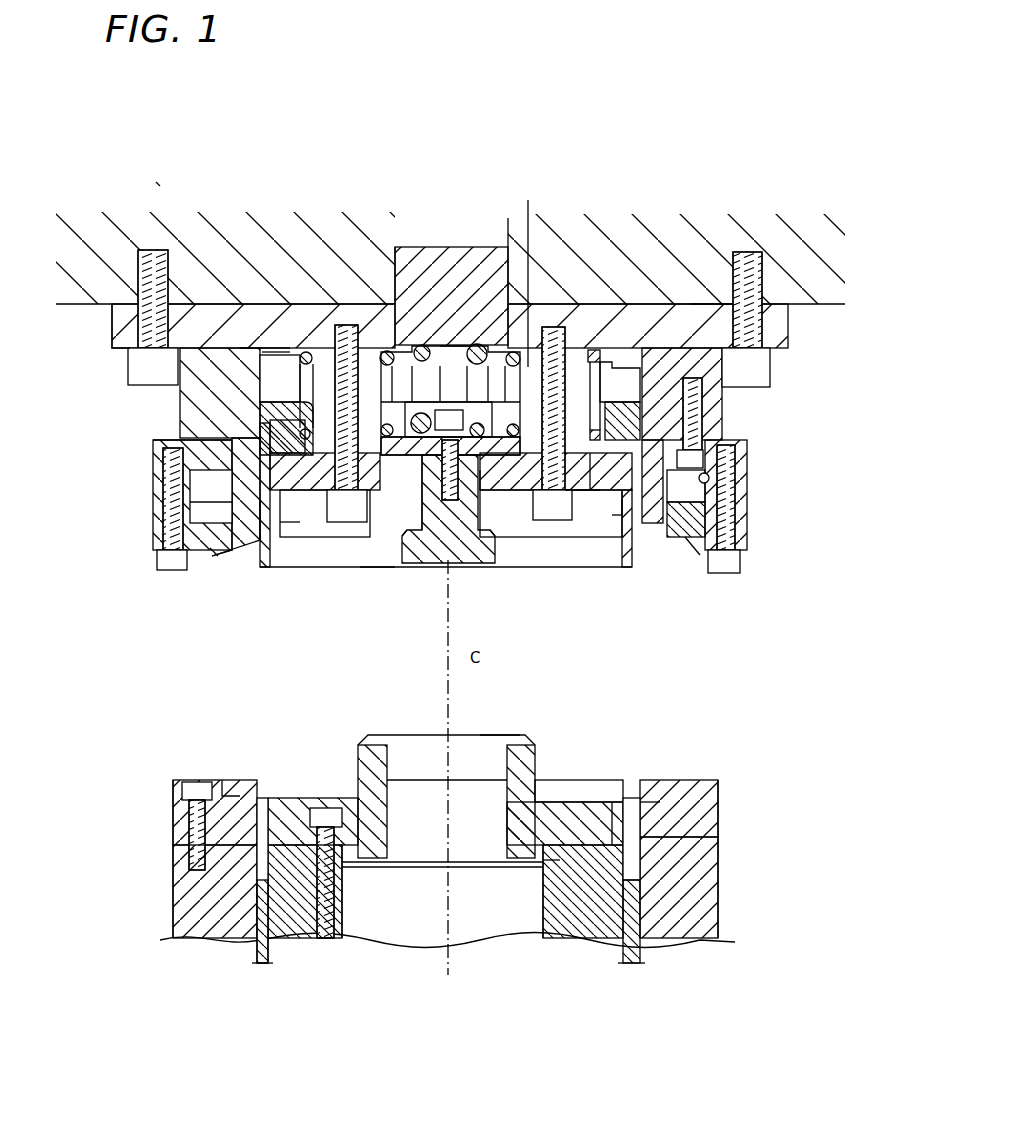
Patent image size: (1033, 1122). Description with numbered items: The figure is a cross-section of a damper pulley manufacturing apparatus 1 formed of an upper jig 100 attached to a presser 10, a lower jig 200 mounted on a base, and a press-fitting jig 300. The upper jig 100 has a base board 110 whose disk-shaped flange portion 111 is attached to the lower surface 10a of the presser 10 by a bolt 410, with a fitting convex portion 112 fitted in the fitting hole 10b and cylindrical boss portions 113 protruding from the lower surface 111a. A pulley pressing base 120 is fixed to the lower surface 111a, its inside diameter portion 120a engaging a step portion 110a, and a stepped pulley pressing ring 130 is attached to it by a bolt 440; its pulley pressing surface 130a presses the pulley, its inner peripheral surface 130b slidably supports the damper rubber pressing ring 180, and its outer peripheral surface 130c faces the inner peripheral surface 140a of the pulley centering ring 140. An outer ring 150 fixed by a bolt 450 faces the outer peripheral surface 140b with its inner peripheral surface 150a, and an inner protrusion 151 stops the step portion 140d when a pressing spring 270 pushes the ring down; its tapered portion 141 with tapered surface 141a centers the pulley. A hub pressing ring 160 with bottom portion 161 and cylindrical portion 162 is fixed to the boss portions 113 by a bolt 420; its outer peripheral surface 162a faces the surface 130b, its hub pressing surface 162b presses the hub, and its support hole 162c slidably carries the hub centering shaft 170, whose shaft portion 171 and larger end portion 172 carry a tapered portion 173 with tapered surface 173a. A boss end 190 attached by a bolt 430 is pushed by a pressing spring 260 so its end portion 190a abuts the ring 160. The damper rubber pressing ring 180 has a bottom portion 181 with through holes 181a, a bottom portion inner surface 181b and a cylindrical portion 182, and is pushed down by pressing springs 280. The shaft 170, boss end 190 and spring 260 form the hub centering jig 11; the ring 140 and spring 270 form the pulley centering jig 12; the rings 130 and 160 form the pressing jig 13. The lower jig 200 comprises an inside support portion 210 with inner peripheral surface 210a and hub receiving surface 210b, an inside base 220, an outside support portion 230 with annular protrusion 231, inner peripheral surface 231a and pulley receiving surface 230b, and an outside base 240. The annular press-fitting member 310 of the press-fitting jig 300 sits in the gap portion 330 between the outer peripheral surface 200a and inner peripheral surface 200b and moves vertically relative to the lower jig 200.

The damper pulley manufacturing apparatus 1 is at (158, 185).
The presser 10 is at (558, 213).
The lower surface 10a is at (700, 296).
The fitting hole 10b is at (395, 245).
The hub centering jig 11 is at (456, 340).
The pulley centering jig 12 is at (214, 558).
The pressing jig 13 is at (374, 572).
The upper jig 100 is at (460, 410).
The base board 110 is at (588, 288).
The step portion 110a is at (262, 348).
The flange portion 111 is at (646, 336).
The lower surface 111a is at (115, 347).
The fitting convex portion 112 is at (421, 253).
The boss portion 113 is at (531, 271).
The pulley pressing base 120 is at (185, 400).
The inside diameter portion 120a is at (268, 352).
The pulley pressing ring 130 is at (246, 528).
The pulley pressing surface 130a is at (258, 525).
The inner peripheral surface 130b is at (272, 522).
The outer peripheral surface 130c is at (205, 478).
The pulley centering ring 140 is at (154, 513).
The inner peripheral surface 140a is at (660, 522).
The outer peripheral surface 140b is at (195, 516).
The step portion 140d is at (712, 548).
The tapered portion 141 is at (212, 552).
The tapered surface 141a is at (682, 543).
The outer ring 150 is at (751, 526).
The inner peripheral surface 150a is at (708, 478).
The inner protrusion 151 is at (696, 540).
The hub pressing ring 160 is at (528, 530).
The bottom portion 161 is at (600, 472).
The cylindrical portion 162 is at (618, 519).
The outer peripheral surface 162a is at (626, 505).
The hub pressing surface 162b is at (626, 568).
The support hole 162c is at (486, 482).
The hub centering shaft 170 is at (452, 528).
The shaft portion 171 is at (428, 512).
The end portion 172 is at (452, 530).
The tapered portion 173 is at (408, 560).
The tapered surface 173a is at (484, 556).
The damper rubber pressing ring 180 is at (264, 560).
The bottom portion 181 is at (280, 400).
The through hole 181a is at (307, 366).
The bottom portion inner surface 181b is at (584, 495).
The cylindrical portion 182 is at (283, 500).
The boss end 190 is at (395, 416).
The end portion 190a is at (362, 492).
The lower jig 200 is at (489, 868).
The outer peripheral surface 200a is at (650, 815).
The inner peripheral surface 200b is at (628, 862).
The inside support portion 210 is at (540, 815).
The inner peripheral surface 210a is at (500, 733).
The hub receiving surface 210b is at (614, 800).
The inside base 220 is at (592, 905).
The outside support portion 230 is at (477, 803).
The pulley receiving surface 230b is at (234, 795).
The annular protrusion 231 is at (692, 790).
The inner peripheral surface 231a is at (224, 785).
The outside base 240 is at (690, 862).
The pressing spring 260 is at (482, 345).
The pressing spring 270 is at (178, 440).
The pressing spring 280 is at (600, 362).
The press-fitting jig 300 is at (511, 883).
The annular press-fitting member 310 is at (636, 945).
The gap portion 330 is at (634, 800).
The bolt 410 is at (752, 262).
The bolt 420 is at (550, 522).
The bolt 430 is at (444, 410).
The bolt 440 is at (705, 420).
The bolt 450 is at (165, 462).